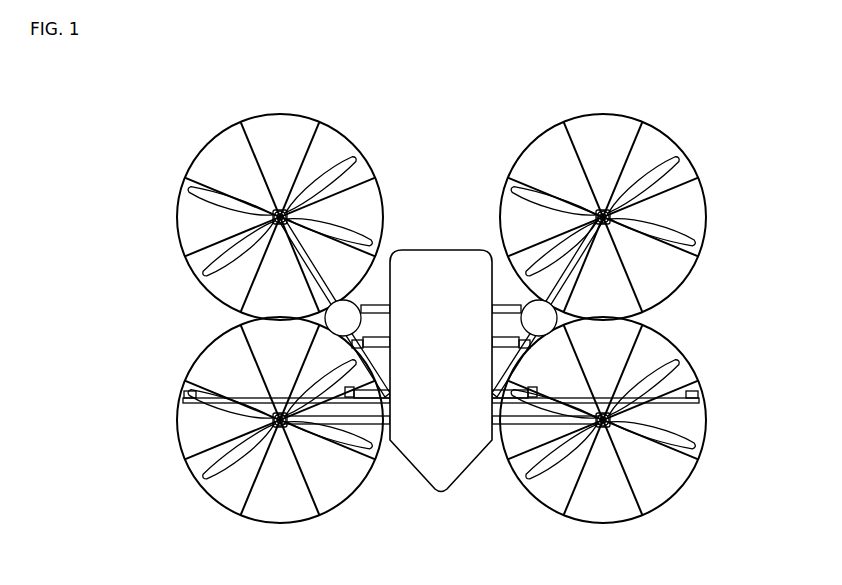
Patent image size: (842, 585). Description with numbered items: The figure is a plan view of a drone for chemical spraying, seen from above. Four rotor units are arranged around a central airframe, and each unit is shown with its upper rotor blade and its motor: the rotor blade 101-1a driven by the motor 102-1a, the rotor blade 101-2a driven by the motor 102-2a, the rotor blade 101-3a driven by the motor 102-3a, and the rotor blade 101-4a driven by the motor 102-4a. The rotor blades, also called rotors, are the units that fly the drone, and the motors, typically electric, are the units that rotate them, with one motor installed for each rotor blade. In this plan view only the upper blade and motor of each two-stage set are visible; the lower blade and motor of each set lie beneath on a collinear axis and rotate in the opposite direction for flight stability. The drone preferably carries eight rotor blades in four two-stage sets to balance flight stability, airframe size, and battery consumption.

The rotor blade 101-1a is at (655, 163).
The motor 102-1a is at (599, 213).
The rotor blade 101-2a is at (668, 433).
The motor 102-2a is at (613, 430).
The rotor blade 101-3a is at (332, 163).
The motor 102-3a is at (277, 213).
The rotor blade 101-4a is at (222, 478).
The motor 102-4a is at (290, 428).